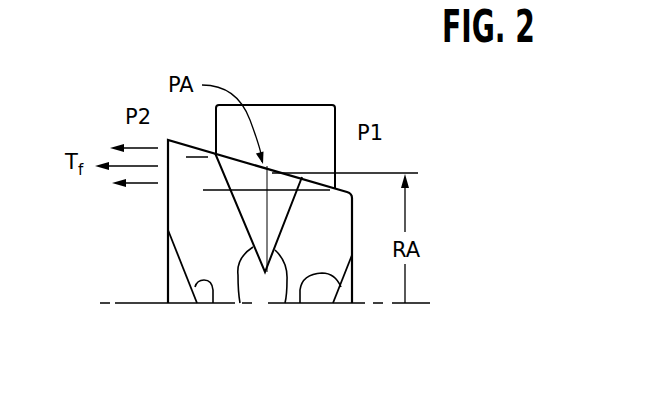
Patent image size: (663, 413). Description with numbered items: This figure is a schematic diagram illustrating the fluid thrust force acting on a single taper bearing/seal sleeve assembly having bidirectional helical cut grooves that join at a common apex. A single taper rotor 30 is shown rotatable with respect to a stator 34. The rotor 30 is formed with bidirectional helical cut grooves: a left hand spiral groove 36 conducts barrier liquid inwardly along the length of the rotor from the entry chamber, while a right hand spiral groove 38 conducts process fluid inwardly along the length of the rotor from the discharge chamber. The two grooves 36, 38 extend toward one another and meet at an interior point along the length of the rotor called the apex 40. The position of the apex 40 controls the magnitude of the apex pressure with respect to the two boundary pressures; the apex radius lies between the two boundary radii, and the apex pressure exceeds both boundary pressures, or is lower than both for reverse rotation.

The single taper rotor 30 is at (322, 290).
The stator 34 is at (305, 132).
The left hand spiral groove 36 is at (213, 303).
The right hand spiral groove 38 is at (300, 303).
The apex 40 is at (265, 274).